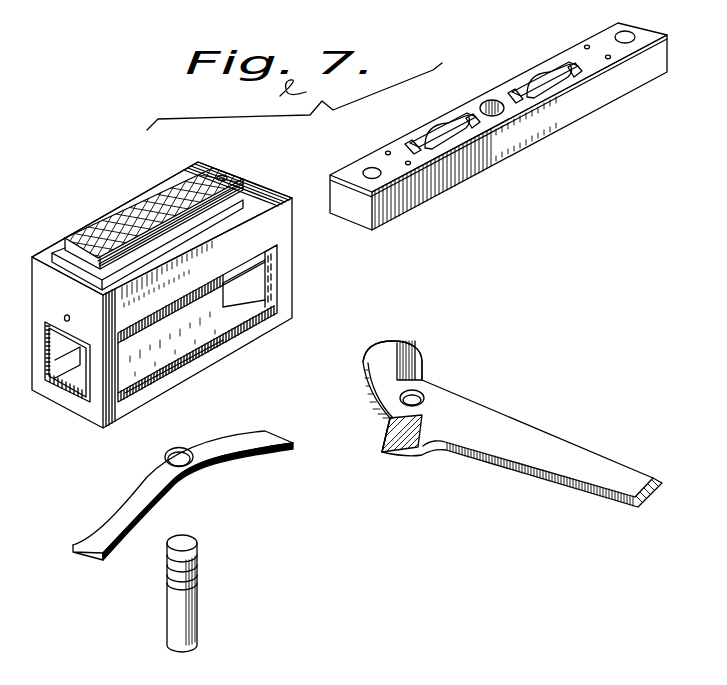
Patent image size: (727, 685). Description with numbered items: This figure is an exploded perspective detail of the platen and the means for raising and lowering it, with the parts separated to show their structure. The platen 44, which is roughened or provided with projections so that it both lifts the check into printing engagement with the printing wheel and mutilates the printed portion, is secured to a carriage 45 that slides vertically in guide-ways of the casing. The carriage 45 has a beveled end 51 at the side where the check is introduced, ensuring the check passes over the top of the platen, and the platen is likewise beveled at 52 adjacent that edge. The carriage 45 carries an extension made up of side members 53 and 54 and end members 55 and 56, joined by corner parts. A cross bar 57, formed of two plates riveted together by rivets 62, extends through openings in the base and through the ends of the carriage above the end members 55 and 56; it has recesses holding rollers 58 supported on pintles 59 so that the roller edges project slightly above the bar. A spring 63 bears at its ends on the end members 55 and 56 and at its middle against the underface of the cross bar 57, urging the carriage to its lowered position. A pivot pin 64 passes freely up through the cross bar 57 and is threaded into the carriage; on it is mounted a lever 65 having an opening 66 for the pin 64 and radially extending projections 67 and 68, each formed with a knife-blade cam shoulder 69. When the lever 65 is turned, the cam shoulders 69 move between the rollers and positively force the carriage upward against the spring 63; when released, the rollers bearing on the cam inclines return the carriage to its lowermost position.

The platen 44 is at (117, 218).
The carriage 45 is at (258, 236).
The beveled end 51 is at (277, 212).
The bevel of platen 52 is at (230, 177).
The side member 53 is at (197, 322).
The side member 54 is at (200, 363).
The end member 55 is at (72, 400).
The end member 56 is at (250, 293).
The cross bar 57 is at (543, 132).
The rollers 58 is at (527, 75).
The pintles 59 is at (565, 66).
The rivets 62 is at (609, 59).
The spring 63 is at (237, 447).
The pivot pin 64 is at (183, 604).
The lever 65 is at (505, 425).
The opening 66 is at (420, 395).
The radially extending projection 67 is at (383, 357).
The radially extending projection 68 is at (417, 438).
The cam shoulder 69 is at (417, 360).